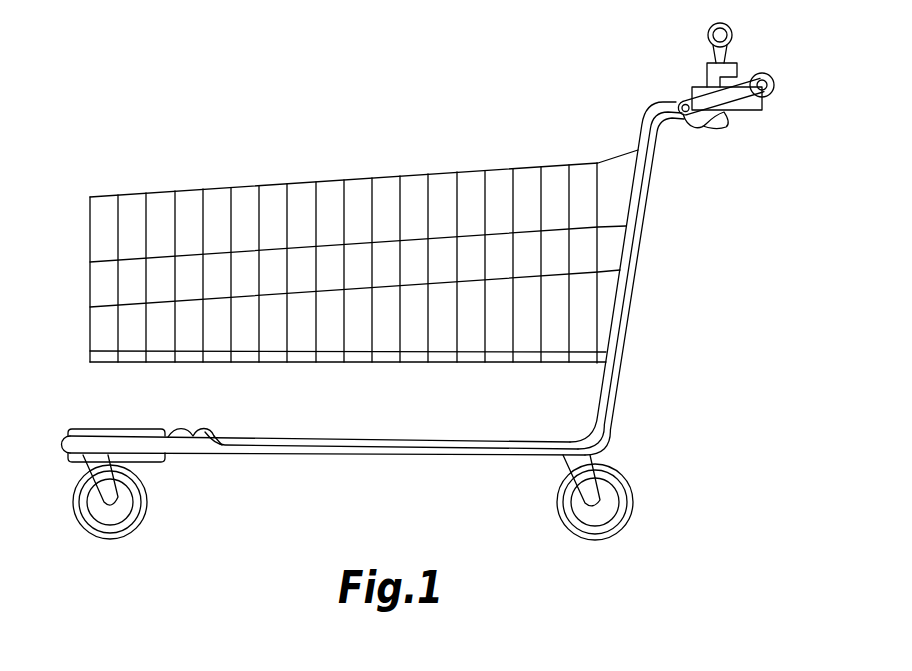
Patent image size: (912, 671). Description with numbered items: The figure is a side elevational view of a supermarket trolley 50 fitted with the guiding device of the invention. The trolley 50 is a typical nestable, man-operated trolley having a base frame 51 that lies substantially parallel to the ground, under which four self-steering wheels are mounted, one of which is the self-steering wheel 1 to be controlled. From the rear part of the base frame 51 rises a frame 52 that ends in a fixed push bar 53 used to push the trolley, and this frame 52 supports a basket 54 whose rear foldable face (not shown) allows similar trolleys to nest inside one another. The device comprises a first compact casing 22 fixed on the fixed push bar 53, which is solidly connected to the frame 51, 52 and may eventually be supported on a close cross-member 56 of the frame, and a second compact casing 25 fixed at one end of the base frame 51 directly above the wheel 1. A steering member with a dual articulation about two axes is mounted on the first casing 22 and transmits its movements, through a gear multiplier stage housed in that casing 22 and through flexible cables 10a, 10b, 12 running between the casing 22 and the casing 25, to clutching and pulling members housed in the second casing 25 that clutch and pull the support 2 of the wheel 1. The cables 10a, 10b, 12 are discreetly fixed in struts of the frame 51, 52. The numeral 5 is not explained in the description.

The self-steering wheel 1 is at (128, 502).
The support of the wheel 2 is at (90, 472).
The hanging eye / hook ring 5 is at (717, 24).
The flexible cable 10a is at (200, 429).
The flexible cable 10b is at (222, 430).
The flexible cable 12 is at (180, 429).
The first compact casing 22 is at (699, 87).
The second compact casing 25 is at (92, 428).
The trolley 50 is at (239, 150).
The base frame 51 is at (377, 452).
The frame 52 is at (633, 295).
The fixed push bar 53 is at (763, 73).
The basket 54 is at (379, 178).
The cross-member 56 is at (683, 106).